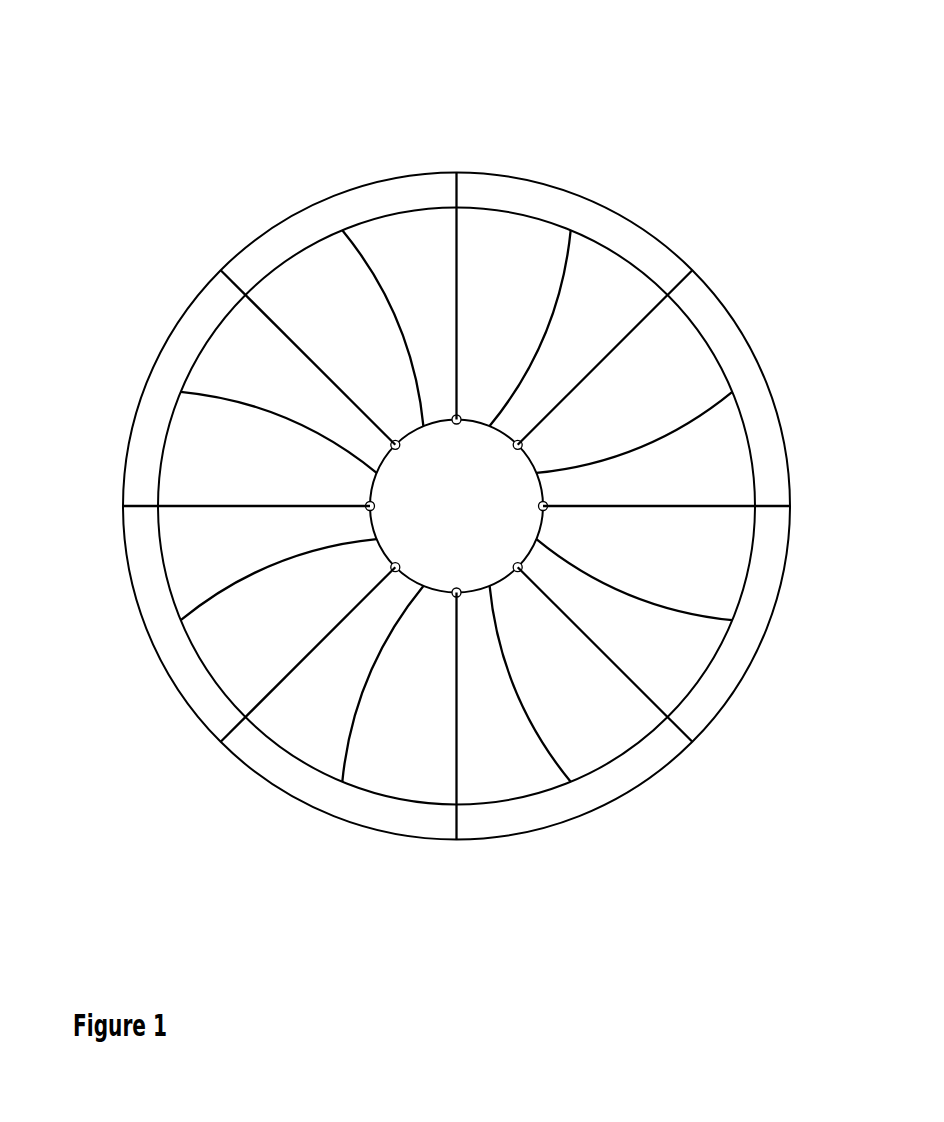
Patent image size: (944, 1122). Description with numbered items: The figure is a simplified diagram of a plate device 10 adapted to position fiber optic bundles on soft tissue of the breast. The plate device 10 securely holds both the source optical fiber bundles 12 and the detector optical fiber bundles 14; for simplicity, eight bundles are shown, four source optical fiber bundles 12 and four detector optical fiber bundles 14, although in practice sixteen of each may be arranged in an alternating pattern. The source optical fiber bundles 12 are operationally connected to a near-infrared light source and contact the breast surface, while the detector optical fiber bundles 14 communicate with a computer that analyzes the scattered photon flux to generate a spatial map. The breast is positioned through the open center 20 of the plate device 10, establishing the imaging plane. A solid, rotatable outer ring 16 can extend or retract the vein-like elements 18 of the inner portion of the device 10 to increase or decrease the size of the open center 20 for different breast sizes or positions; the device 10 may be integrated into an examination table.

The plate device 10 is at (300, 105).
The source optical fiber bundles 12 is at (218, 268).
The detector optical fiber bundles 14 is at (457, 172).
The outer ring 16 is at (723, 330).
The vein-like elements 18 is at (692, 662).
The open center 20 is at (465, 452).